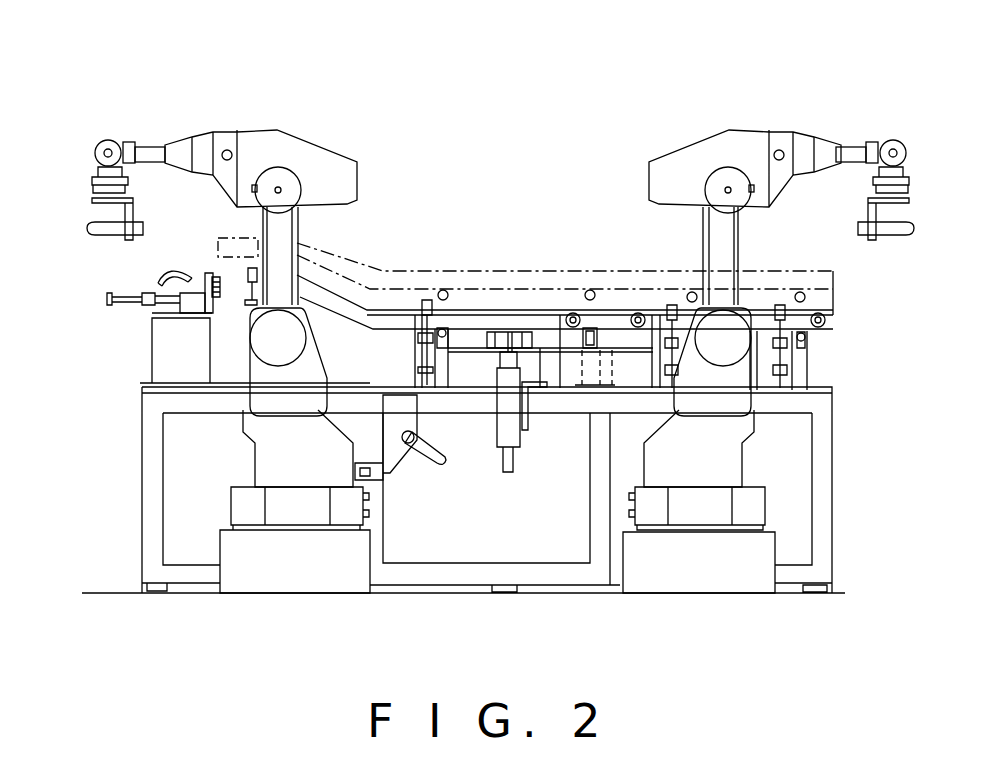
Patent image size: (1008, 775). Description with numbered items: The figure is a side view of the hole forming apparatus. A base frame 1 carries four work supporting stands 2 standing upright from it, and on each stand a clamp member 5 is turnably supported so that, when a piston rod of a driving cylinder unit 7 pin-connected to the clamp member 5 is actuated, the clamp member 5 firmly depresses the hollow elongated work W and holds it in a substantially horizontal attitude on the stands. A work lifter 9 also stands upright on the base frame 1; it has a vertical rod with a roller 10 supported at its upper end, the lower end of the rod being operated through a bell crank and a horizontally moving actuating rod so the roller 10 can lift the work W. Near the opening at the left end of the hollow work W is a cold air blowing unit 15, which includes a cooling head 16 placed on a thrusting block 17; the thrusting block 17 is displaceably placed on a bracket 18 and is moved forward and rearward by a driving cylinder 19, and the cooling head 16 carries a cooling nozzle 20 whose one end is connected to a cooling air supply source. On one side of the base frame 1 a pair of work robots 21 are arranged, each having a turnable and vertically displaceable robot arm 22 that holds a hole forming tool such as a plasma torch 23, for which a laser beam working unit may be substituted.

The base frame 1 is at (142, 502).
The work supporting stand 2 is at (243, 310).
The clamp member 5 is at (425, 300).
The driving cylinder unit 7 is at (418, 362).
The work lifter 9 is at (440, 372).
The roller 10 is at (442, 328).
The cold air blowing unit 15 is at (220, 322).
The cooling head 16 is at (198, 280).
The thrusting block 17 is at (188, 307).
The bracket 18 is at (158, 350).
The driving cylinder 19 is at (125, 310).
The cooling nozzle 20 is at (152, 276).
The work robot 21 is at (215, 120).
The robot arm 22 is at (310, 138).
The plasma torch 23 is at (90, 226).
The hollow elongated work W is at (357, 300).